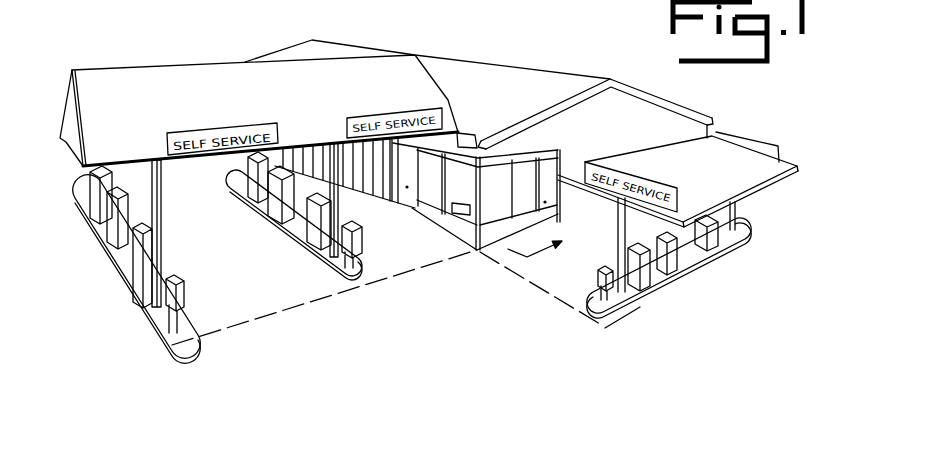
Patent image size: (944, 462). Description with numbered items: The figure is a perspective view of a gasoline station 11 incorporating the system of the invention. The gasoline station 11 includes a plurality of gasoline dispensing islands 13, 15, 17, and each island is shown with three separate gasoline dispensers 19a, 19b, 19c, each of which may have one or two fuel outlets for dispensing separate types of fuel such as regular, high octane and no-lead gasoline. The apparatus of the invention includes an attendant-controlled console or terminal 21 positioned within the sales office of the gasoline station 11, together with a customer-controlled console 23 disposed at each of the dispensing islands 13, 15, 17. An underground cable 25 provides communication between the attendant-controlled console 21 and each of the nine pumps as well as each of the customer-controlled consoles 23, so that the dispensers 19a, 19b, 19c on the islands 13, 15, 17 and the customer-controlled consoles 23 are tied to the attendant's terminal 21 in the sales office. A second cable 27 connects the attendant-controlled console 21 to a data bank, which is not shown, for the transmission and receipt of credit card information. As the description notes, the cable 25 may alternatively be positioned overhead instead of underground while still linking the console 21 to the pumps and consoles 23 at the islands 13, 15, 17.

The gasoline station 11 is at (540, 82).
The gasoline dispensing island 13 is at (133, 321).
The gasoline dispensing island 15 is at (293, 232).
The gasoline dispensing island 17 is at (666, 277).
The gasoline dispenser 19a is at (95, 218).
The gasoline dispenser 19b is at (108, 244).
The gasoline dispenser 19c is at (137, 288).
The attendant-controlled console 21 is at (447, 213).
The customer-controlled console 23 is at (187, 278).
The underground cable 25 is at (283, 312).
The second cable 27 is at (528, 257).